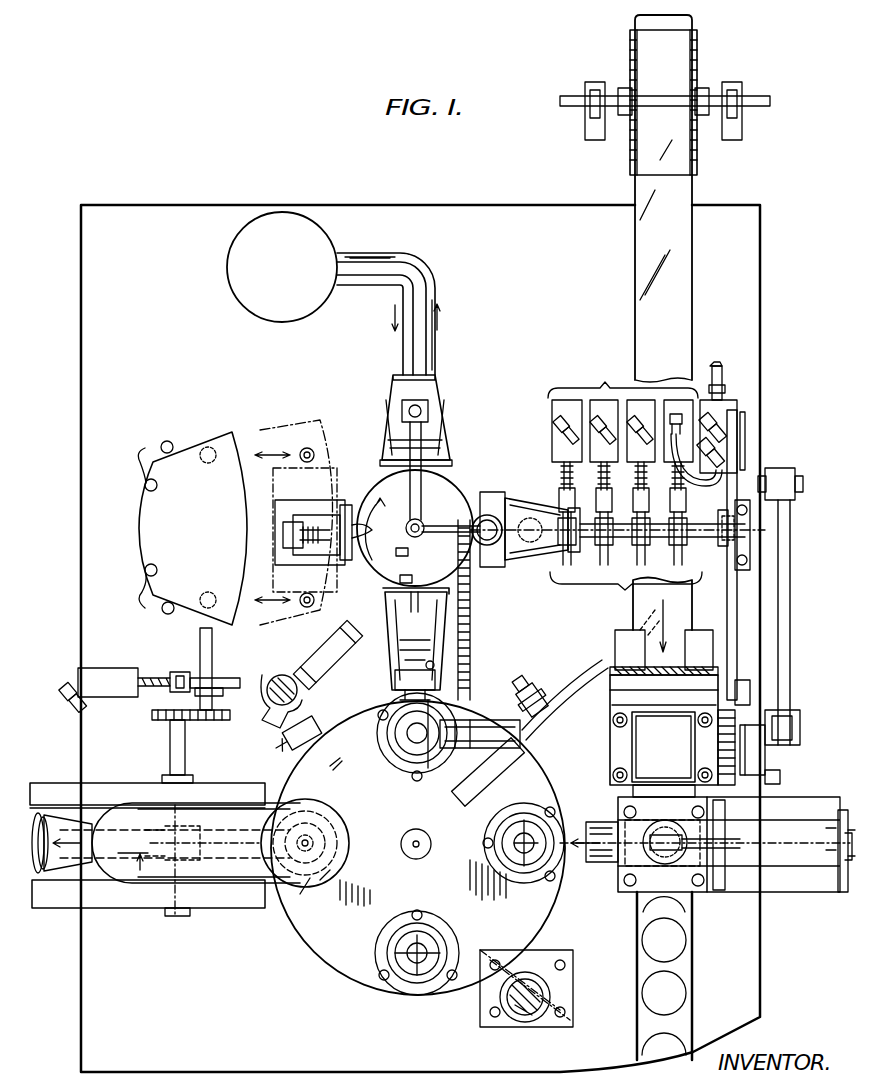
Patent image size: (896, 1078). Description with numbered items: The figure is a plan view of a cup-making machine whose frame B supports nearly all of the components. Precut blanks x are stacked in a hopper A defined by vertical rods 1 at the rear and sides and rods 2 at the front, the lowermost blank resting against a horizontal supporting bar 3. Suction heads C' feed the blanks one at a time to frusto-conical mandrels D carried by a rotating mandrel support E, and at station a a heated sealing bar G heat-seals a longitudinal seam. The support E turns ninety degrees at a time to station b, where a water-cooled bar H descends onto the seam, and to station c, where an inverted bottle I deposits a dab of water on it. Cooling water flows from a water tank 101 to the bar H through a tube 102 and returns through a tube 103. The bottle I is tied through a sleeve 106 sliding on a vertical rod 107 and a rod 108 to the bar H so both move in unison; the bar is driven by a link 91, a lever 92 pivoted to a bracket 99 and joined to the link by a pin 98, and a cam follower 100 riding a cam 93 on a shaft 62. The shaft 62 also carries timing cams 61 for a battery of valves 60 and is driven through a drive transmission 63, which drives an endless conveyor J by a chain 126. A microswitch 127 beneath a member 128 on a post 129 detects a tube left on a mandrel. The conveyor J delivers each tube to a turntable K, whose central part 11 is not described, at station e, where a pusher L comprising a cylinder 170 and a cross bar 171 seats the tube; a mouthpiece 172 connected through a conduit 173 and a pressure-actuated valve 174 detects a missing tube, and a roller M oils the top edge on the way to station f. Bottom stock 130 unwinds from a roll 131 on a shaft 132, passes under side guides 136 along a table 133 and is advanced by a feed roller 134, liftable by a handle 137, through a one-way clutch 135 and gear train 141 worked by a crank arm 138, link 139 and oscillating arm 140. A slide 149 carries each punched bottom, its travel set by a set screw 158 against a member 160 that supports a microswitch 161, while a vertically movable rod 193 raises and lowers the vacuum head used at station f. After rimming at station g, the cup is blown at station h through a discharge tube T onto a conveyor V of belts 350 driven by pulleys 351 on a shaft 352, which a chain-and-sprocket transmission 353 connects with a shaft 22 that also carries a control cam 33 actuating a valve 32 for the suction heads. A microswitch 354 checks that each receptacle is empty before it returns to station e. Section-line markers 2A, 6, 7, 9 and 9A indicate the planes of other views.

The frame B is at (150, 199).
The stock 130 is at (688, 258).
The roll 131 is at (698, 54).
The shaft 132 is at (758, 98).
The water tank 101 is at (334, 252).
The tube 102 is at (382, 289).
The tube 103 is at (427, 283).
The water-cooled bar H is at (456, 412).
The station b is at (456, 400).
The rod 108 is at (409, 490).
The mandrel support E is at (469, 489).
The frusto-conical mandrels D is at (457, 471).
The vertical rod 107 is at (421, 524).
The sleeve 106 is at (418, 545).
The chain 126 is at (470, 640).
The bottle I is at (500, 545).
The station c is at (540, 500).
The drive transmission 63 is at (566, 550).
The shaft 62 is at (705, 540).
The timing cams 61 is at (608, 588).
The valves 60 is at (607, 386).
The cam follower 100 is at (720, 522).
The pressure actuated valve 174 is at (700, 395).
The link 91 is at (718, 416).
The lever 92 is at (738, 460).
The pin 98 is at (746, 430).
The cam 93 is at (725, 550).
The crank arm 138 is at (790, 488).
The link 139 is at (791, 582).
The bracket 99 is at (751, 694).
The oscillating arm 140 is at (785, 730).
The one-way clutch 135 is at (764, 752).
The gear train 141 is at (770, 784).
The side guides 136 is at (612, 662).
The table 133 is at (648, 625).
The handle 137 is at (668, 660).
The feed roller 134 is at (676, 708).
The member 160 is at (690, 884).
The microswitch 161 is at (650, 860).
The set screw 158 is at (745, 840).
The slide 149 is at (600, 862).
The station a is at (245, 538).
The hopper A is at (138, 491).
The rods 1 is at (138, 510).
The suction heads C' is at (268, 516).
The blanks x is at (175, 520).
The heated sealing bar G is at (333, 502).
The shaft 22 is at (200, 634).
The valve 32 is at (116, 668).
The control cam 33 is at (216, 678).
The chain and sprocket drive transmission 353 is at (151, 713).
The shaft 352 is at (169, 740).
The discharge tube T is at (222, 885).
The pulleys 351 is at (200, 843).
The belts 350 is at (155, 905).
The conveyor V is at (90, 880).
The post 129 is at (277, 678).
The member 128 is at (322, 674).
The microswitch 127 is at (336, 652).
The microswitch 354 is at (282, 740).
The endless conveyor J is at (395, 682).
The turntable K is at (288, 944).
The hub 11 is at (429, 848).
The station e is at (407, 803).
The pusher L is at (413, 726).
The cross bar 171 is at (412, 760).
The cylinder 170 is at (451, 784).
The mouthpiece 172 is at (502, 705).
The conduit 173 is at (536, 684).
The roller M is at (542, 760).
The station f is at (480, 819).
The station g is at (406, 909).
The station h is at (368, 858).
The vertically movable rod 193 is at (512, 1004).
The rods 2 is at (446, 534).
The section line 2A is at (472, 612).
The horizontal supporting bar 3 is at (430, 364).
The section line 6 is at (852, 848).
The section line 7 is at (522, 794).
The section line 9 is at (351, 941).
The section line 9A is at (127, 1036).